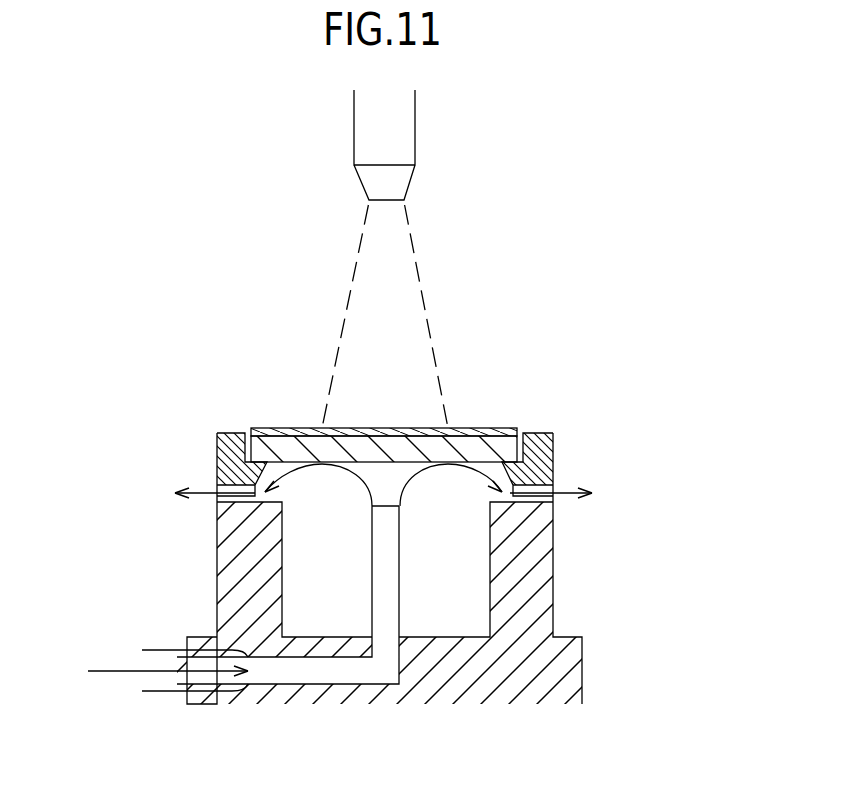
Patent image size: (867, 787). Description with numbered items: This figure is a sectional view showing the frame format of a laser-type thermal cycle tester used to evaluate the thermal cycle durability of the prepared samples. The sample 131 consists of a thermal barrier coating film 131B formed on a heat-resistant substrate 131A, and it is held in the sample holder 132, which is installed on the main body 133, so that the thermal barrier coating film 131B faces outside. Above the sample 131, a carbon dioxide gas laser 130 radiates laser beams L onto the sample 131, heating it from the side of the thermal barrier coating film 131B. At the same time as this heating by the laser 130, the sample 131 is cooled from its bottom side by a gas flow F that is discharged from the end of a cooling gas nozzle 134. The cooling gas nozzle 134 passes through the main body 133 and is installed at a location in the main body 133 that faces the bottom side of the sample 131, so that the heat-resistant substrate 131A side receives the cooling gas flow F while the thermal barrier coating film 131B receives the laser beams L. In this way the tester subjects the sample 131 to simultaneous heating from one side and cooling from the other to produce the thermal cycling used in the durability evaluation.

The carbon dioxide gas laser 130 is at (410, 132).
The sample 131 is at (489, 372).
The heat-resistant substrate 131A is at (495, 432).
The thermal barrier coating film 131B is at (472, 429).
The sample holder 132 is at (550, 450).
The main body 133 is at (543, 563).
The cooling gas nozzle 134 is at (390, 577).
The laser beams L is at (363, 298).
The gas flow F is at (366, 474).